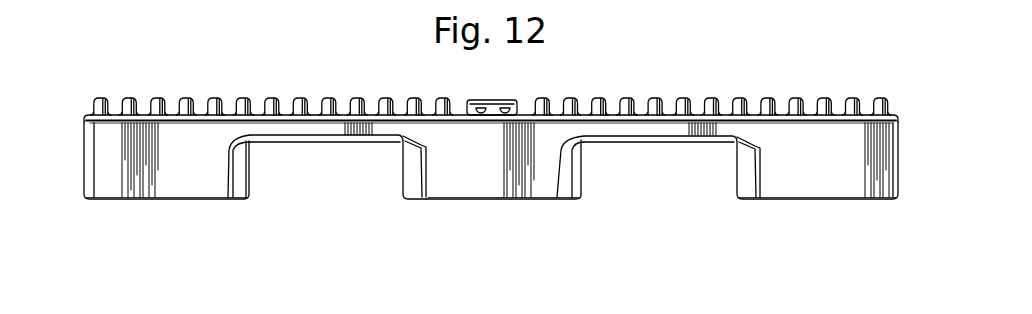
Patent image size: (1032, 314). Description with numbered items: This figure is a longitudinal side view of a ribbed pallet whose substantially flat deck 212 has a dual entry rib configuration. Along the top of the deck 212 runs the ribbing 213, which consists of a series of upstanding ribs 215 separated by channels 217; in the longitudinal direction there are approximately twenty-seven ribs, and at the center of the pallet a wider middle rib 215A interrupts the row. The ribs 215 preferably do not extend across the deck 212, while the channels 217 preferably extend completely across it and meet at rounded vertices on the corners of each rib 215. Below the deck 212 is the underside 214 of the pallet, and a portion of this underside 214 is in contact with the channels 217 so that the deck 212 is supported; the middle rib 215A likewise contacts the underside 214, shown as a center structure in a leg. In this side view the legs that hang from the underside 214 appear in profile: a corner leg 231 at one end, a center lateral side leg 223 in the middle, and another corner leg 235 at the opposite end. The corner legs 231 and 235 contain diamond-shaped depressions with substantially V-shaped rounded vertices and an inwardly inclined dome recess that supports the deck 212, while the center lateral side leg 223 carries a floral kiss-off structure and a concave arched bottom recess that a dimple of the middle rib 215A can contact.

The deck 212 is at (244, 97).
The ribbing 213 is at (711, 68).
The middle rib 215A is at (478, 99).
The ribs 215 is at (770, 100).
The channels 217 is at (838, 108).
The corner leg 231 is at (177, 173).
The underside 214 is at (403, 169).
The center lateral side leg 223 is at (536, 178).
The corner leg 235 is at (797, 173).